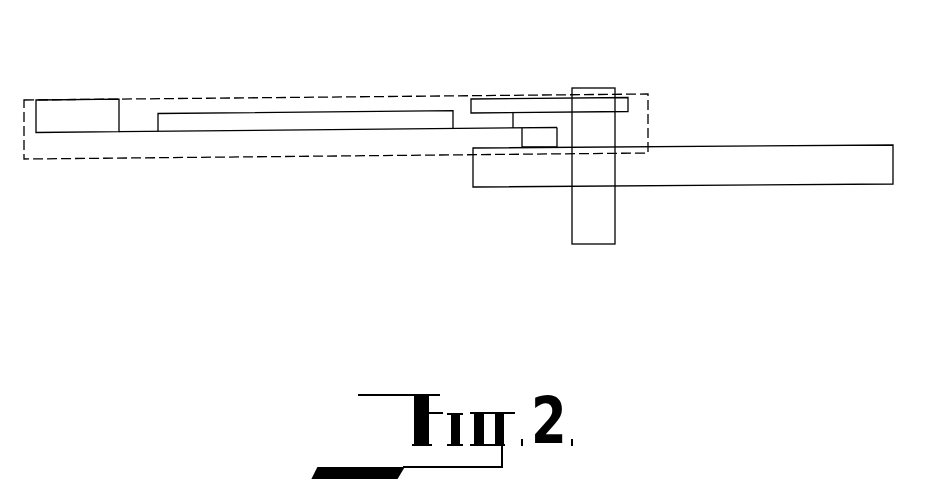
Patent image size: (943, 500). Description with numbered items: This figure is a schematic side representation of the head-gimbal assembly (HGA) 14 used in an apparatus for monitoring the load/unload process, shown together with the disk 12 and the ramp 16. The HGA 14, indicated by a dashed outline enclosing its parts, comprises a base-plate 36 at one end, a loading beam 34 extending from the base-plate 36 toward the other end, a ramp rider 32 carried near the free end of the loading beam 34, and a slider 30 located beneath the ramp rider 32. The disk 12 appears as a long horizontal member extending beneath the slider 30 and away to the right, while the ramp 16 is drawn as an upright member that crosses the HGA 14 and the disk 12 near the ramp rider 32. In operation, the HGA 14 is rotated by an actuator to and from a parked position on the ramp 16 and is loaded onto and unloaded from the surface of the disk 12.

The disk 12 is at (777, 157).
The head-gimbal assembly 14 is at (333, 98).
The ramp 16 is at (607, 220).
The slider 30 is at (537, 140).
The ramp rider 32 is at (533, 98).
The loading beam 34 is at (303, 133).
The base-plate 36 is at (87, 133).